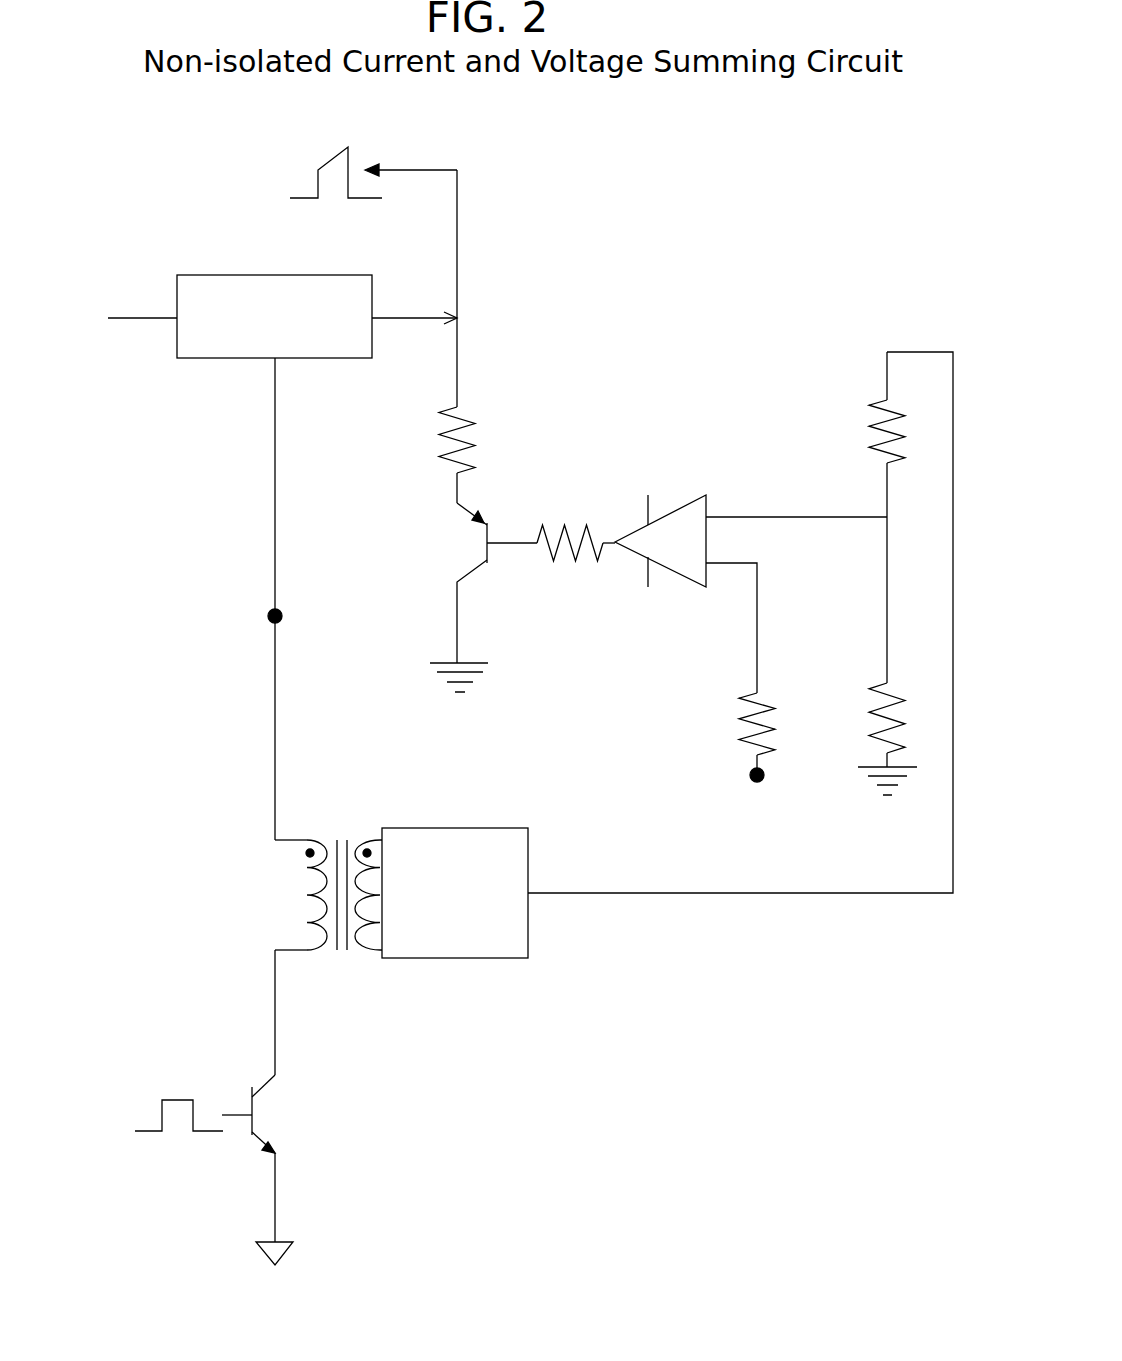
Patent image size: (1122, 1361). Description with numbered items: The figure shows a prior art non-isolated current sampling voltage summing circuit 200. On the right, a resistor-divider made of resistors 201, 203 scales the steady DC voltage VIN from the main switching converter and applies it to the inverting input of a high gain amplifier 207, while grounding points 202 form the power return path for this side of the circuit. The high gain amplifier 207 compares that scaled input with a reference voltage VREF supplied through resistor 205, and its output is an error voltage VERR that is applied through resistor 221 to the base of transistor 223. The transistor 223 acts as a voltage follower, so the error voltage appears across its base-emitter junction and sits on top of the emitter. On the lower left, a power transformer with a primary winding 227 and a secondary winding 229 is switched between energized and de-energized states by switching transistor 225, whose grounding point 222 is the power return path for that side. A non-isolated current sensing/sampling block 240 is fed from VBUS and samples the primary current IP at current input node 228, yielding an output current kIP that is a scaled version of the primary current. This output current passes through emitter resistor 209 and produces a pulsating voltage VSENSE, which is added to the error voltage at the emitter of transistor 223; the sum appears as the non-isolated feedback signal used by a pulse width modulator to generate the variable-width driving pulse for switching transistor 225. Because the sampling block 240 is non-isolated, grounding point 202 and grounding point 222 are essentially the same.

The current sampling voltage summing circuit 200 is at (745, 247).
The resistor 201 is at (868, 435).
The grounding point 202 is at (483, 673).
The resistor 203 is at (882, 700).
The resistor 205 is at (750, 727).
The high gain amplifier 207 is at (673, 527).
The emitter resistor 209 is at (470, 435).
The resistor 221 is at (567, 527).
The grounding point 222 is at (292, 1245).
The transistor 223 is at (473, 567).
The switching transistor 225 is at (252, 1135).
The primary winding 227 is at (303, 897).
The current input node 228 is at (268, 610).
The secondary winding 229 is at (368, 952).
The non-isolated current sensing/sampling block 240 is at (180, 360).